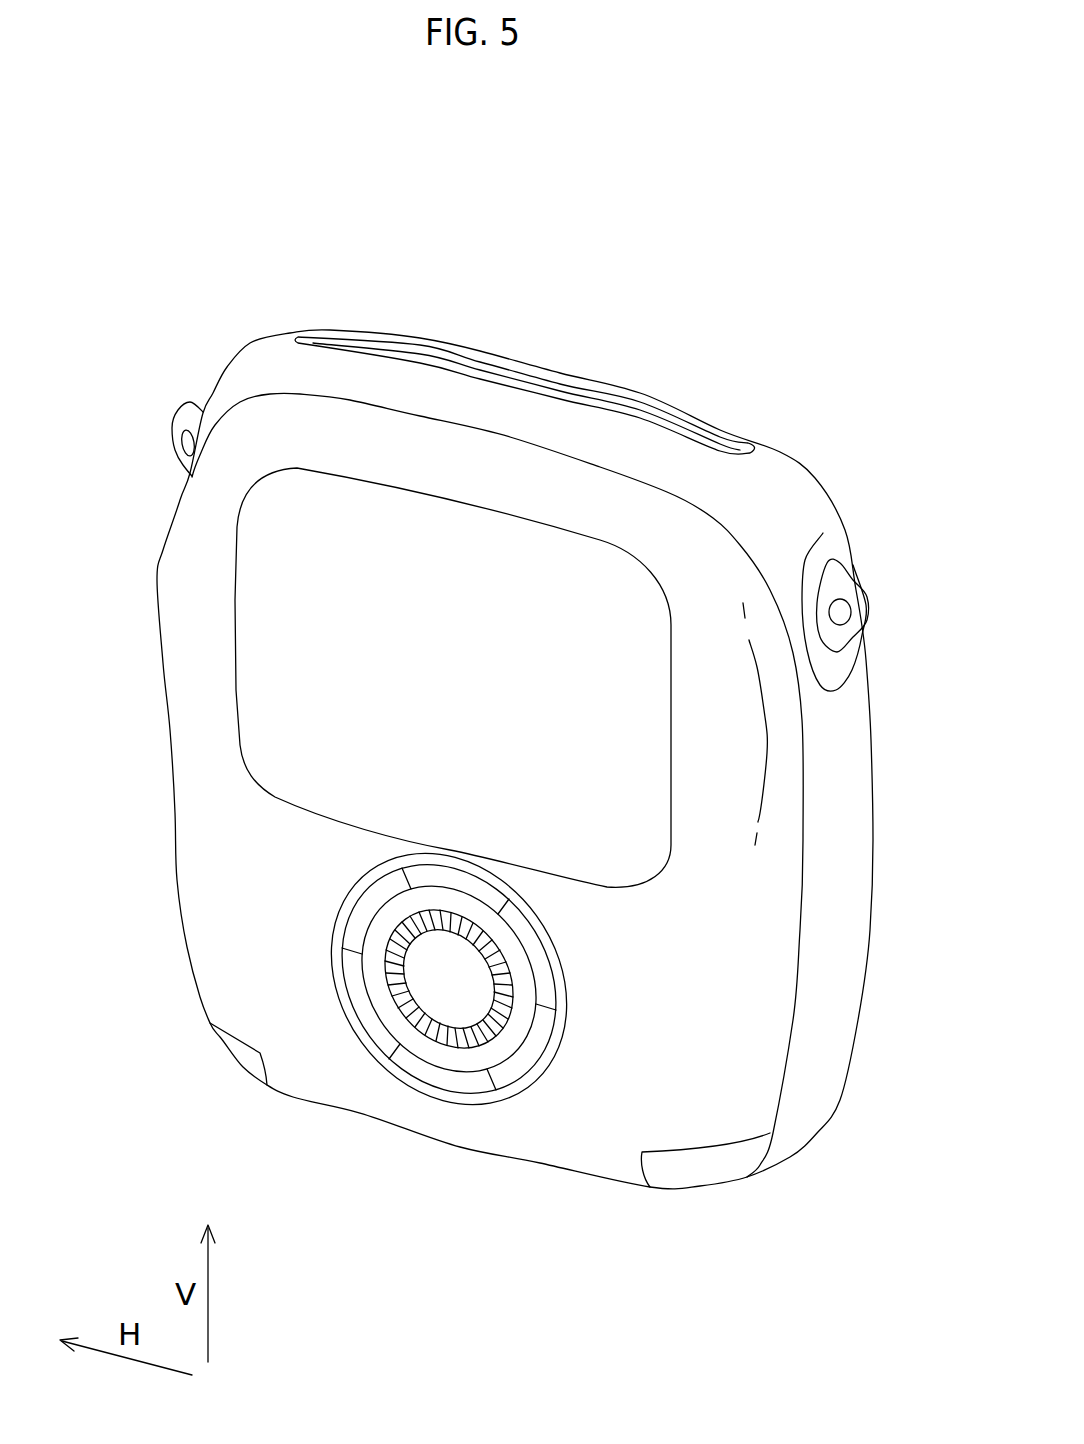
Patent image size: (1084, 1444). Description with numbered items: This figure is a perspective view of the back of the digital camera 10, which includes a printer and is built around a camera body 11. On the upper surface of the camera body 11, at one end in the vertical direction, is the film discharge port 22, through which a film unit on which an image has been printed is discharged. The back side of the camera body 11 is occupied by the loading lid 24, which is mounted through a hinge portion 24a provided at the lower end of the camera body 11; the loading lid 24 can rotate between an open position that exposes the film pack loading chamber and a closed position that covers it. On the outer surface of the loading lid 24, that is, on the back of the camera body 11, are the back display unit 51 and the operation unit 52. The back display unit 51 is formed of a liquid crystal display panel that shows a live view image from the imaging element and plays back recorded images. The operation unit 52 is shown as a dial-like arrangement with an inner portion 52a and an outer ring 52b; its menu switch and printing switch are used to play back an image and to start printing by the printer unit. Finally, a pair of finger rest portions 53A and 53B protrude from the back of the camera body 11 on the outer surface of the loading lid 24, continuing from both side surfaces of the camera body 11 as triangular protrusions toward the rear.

The digital camera 10 is at (823, 207).
The camera body 11 is at (247, 355).
The film discharge port 22 is at (628, 413).
The loading lid 24 is at (733, 530).
The hinge portion 24a is at (603, 1168).
The back display unit 51 is at (305, 666).
The operation unit 52 is at (402, 1070).
The inner knurled ring of dial 52a is at (427, 980).
The outer ring of dial 52b is at (530, 1052).
The finger rest portion 53A is at (170, 590).
The finger rest portion 53B is at (752, 733).